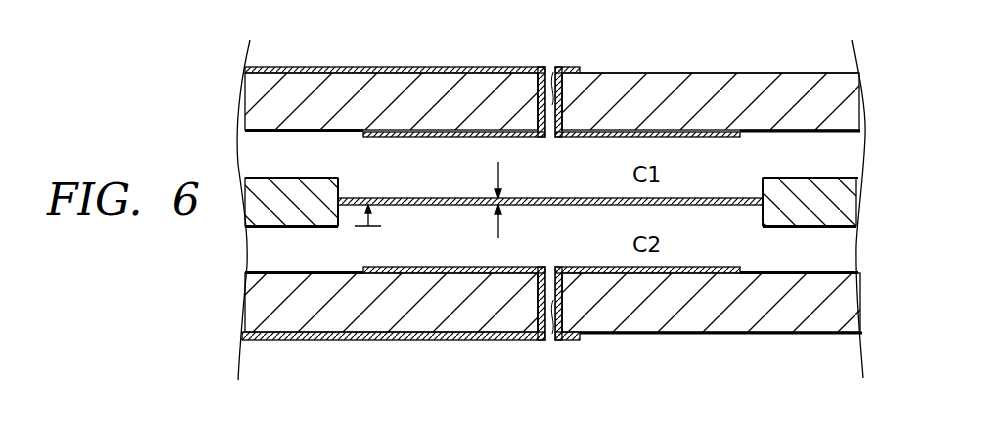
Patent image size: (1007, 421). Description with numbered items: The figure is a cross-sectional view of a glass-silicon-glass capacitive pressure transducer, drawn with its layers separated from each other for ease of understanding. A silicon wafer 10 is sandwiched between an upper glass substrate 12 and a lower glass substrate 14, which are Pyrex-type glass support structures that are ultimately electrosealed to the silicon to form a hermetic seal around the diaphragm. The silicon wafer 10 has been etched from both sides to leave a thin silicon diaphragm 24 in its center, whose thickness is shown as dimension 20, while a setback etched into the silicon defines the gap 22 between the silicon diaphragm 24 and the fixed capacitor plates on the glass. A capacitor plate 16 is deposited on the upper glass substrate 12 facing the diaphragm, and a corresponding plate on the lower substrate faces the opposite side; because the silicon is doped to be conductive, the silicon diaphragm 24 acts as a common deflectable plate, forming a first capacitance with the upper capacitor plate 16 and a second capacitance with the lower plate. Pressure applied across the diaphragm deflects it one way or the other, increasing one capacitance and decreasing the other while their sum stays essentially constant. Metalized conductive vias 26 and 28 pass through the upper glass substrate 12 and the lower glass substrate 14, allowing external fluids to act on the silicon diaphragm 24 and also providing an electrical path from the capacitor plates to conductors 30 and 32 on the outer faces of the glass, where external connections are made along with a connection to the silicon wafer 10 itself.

The silicon wafer 10 is at (852, 203).
The upper glass substrate 12 is at (857, 108).
The lower glass substrate 14 is at (850, 300).
The capacitor plate 16 is at (704, 138).
The diaphragm thickness 20 is at (500, 228).
The gap 22 is at (372, 214).
The silicon diaphragm 24 is at (560, 197).
The conductive via 26 is at (551, 72).
The conductive via 28 is at (553, 340).
The conductor 30 is at (332, 67).
The conductor 32 is at (330, 342).